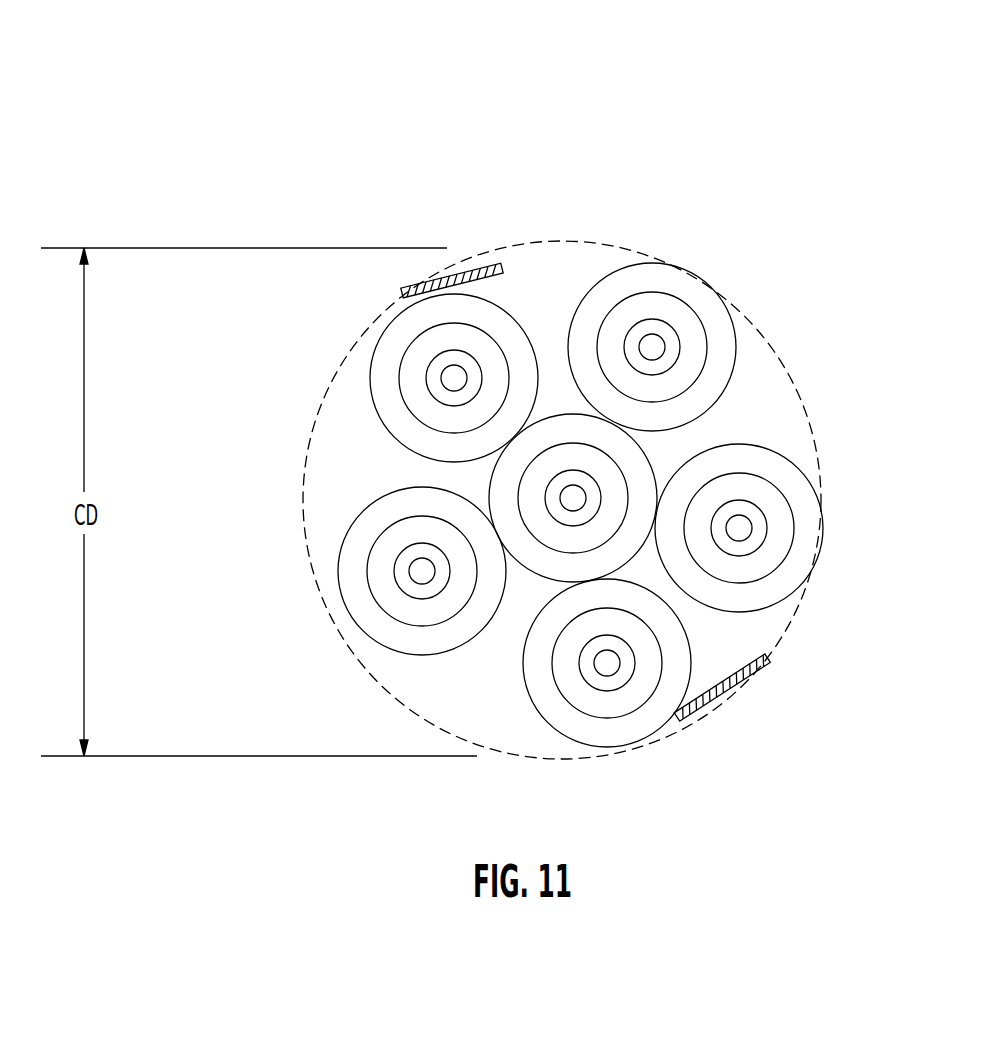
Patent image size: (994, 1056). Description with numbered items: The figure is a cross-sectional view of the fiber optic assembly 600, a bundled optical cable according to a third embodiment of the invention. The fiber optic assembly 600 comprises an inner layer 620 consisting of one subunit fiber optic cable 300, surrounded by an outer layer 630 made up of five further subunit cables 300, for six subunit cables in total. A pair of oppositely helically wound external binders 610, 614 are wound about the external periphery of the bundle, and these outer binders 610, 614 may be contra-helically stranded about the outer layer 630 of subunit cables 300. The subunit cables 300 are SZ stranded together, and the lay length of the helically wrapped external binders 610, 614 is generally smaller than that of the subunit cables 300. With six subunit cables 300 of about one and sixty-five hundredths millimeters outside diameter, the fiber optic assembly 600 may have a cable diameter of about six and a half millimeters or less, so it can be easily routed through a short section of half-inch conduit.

The fiber optic assembly 600 is at (347, 122).
The external binder 610 is at (463, 265).
The external binder 614 is at (720, 707).
The inner layer 620 is at (558, 393).
The outer layer 630 is at (705, 255).
The subunit fiber optic cable 300 is at (637, 470).